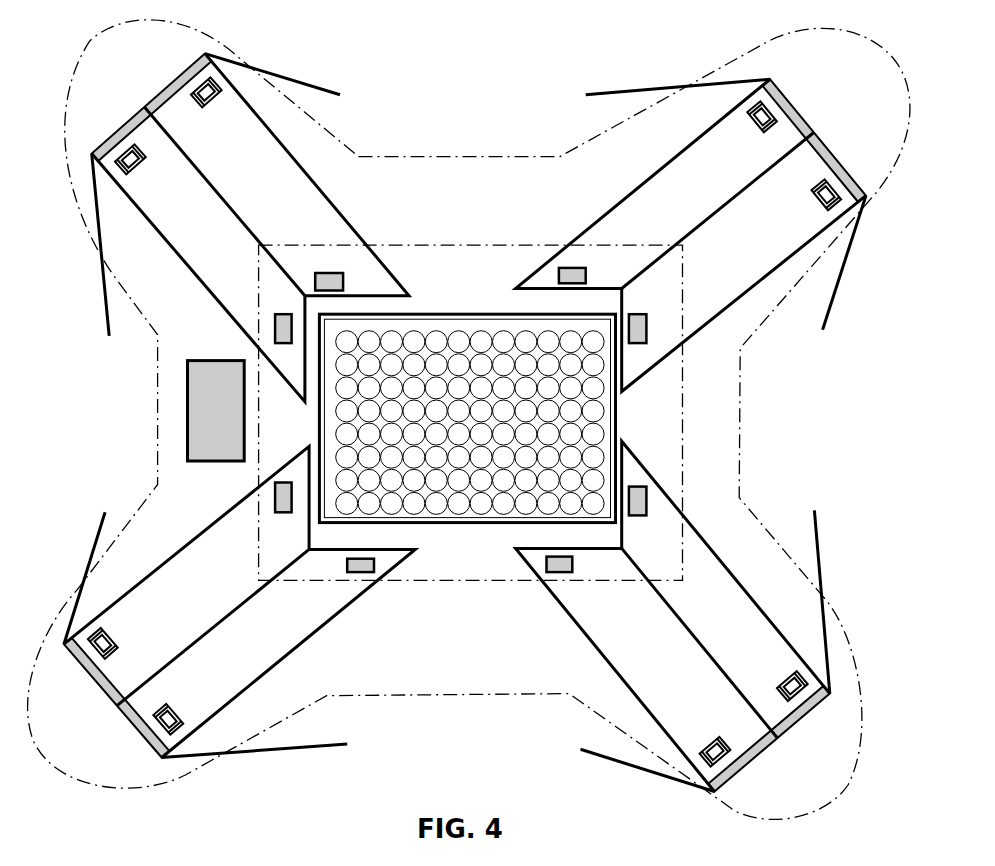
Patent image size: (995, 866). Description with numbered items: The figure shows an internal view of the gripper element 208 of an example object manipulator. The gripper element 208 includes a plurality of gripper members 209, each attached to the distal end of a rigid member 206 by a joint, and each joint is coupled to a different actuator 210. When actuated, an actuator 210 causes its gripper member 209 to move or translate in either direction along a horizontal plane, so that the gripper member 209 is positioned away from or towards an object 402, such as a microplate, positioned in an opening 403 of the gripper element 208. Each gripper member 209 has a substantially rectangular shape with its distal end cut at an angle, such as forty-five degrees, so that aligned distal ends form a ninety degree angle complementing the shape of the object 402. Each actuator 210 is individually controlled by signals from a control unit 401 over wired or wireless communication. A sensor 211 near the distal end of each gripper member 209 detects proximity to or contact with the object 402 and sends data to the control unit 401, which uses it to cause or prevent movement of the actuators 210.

The rigid member 206 is at (330, 79).
The gripper element 208 is at (477, 147).
The gripper member 209 is at (465, 423).
The actuator 210 is at (216, 113).
The sensor 211 is at (320, 263).
The control unit 401 is at (196, 428).
The object 402 is at (494, 306).
The opening 403 is at (500, 237).